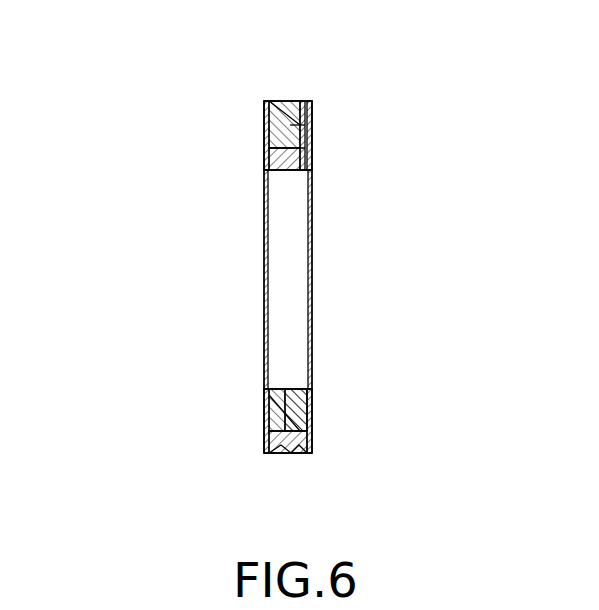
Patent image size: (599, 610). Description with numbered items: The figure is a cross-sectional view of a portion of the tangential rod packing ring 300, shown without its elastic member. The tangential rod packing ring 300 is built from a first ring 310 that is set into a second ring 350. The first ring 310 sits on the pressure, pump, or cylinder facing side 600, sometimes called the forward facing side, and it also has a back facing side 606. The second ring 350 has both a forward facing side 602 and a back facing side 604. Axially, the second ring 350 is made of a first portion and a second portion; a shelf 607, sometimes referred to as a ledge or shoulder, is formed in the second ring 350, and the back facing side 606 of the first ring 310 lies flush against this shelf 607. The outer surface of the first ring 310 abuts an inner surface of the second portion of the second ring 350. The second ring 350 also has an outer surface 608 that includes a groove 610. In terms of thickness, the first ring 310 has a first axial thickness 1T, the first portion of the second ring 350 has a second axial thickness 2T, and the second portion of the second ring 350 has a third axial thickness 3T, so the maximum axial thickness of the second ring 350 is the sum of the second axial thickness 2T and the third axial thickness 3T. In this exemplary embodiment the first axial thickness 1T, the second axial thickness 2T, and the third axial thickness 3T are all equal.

The tangential rod packing ring 300 is at (143, 168).
The third axial thickness 3T is at (310, 172).
The second axial thickness 2T is at (267, 171).
The first axial thickness 1T is at (310, 378).
The outer surface 608 is at (273, 105).
The groove 610 is at (287, 113).
The back facing side 606 is at (287, 148).
The shelf 607 is at (280, 395).
The back facing side 604 is at (268, 414).
The pressure, pump, or cylinder facing side 600 is at (312, 408).
The first ring 310 is at (312, 426).
The second ring 350 is at (277, 445).
The forward facing side 602 is at (310, 450).